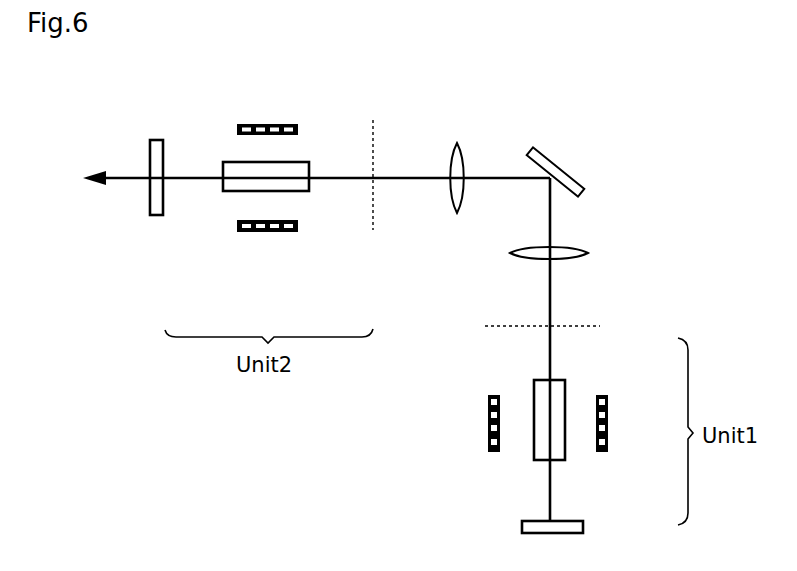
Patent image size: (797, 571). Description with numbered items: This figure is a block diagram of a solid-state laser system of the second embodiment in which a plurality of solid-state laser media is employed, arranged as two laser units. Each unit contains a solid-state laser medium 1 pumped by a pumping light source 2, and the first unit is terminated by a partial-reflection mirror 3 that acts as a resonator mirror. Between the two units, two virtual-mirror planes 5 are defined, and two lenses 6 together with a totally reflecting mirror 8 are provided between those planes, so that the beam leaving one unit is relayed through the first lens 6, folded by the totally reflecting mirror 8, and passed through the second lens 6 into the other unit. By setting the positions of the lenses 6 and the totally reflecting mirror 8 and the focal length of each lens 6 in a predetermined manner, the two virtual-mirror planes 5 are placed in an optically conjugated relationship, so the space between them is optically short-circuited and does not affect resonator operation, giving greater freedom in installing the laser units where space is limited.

The solid-state laser medium 1 is at (302, 160).
The pumping light source 2 is at (257, 120).
The reflecting mirror 3 is at (160, 140).
The virtual-mirror plane 5 is at (372, 108).
The lens 6 is at (458, 130).
The totally reflecting mirror 8 is at (562, 153).